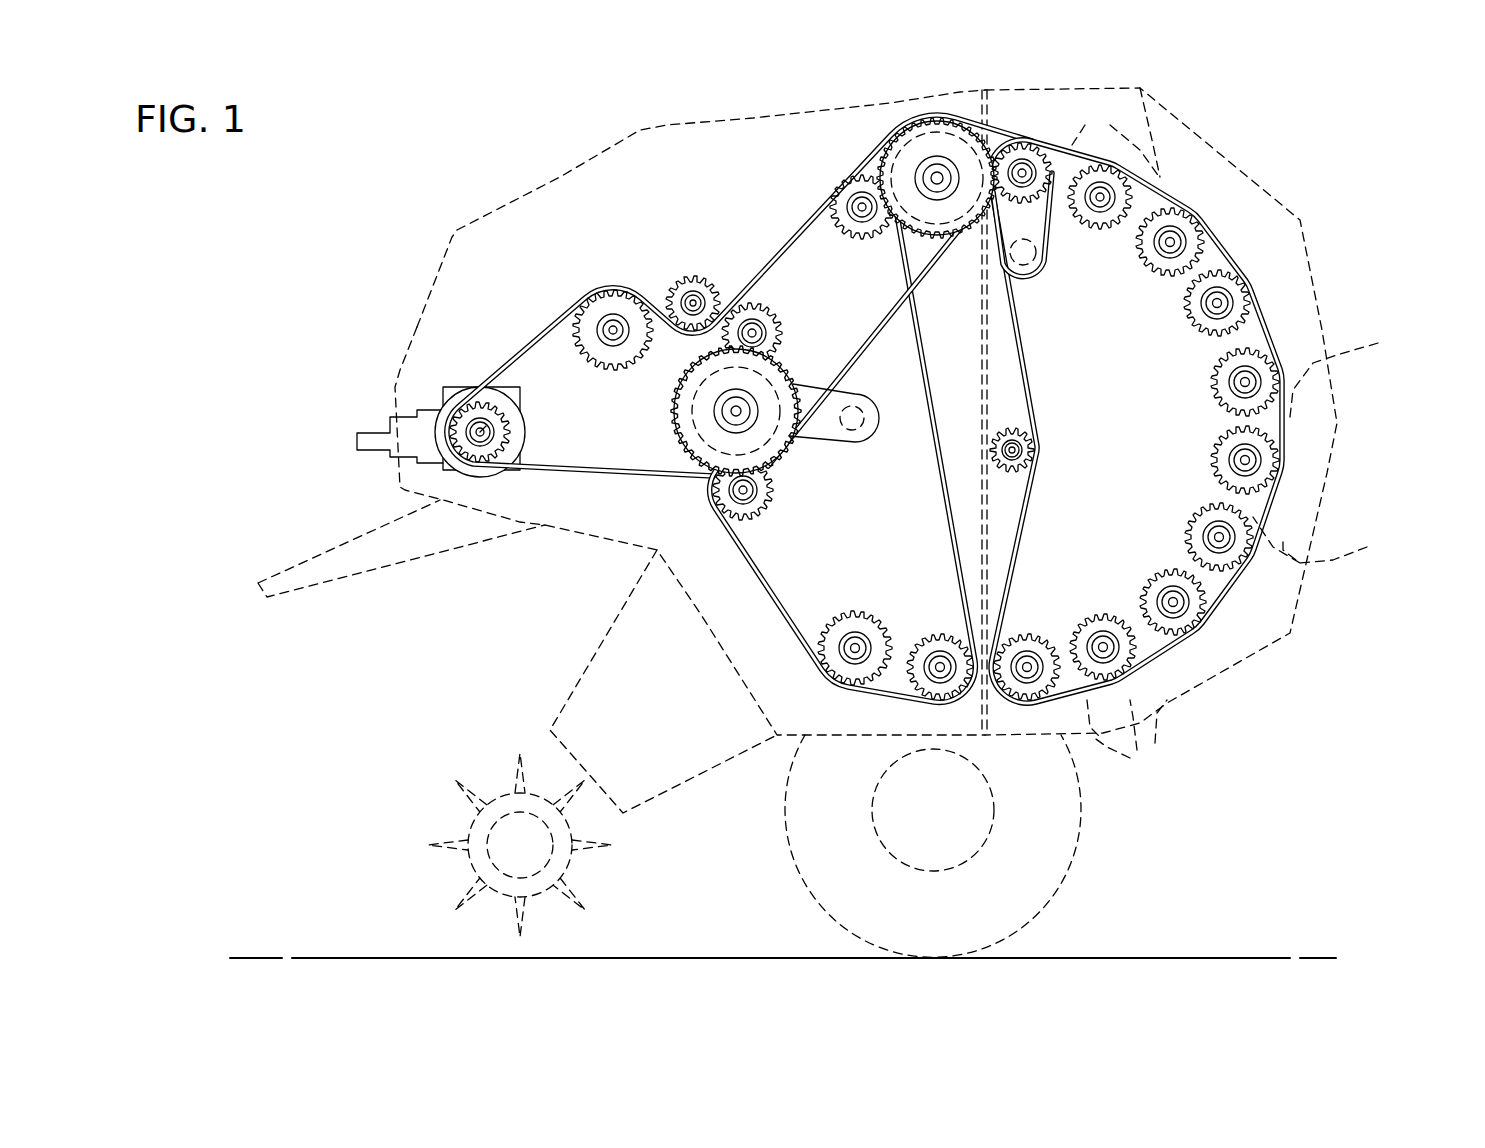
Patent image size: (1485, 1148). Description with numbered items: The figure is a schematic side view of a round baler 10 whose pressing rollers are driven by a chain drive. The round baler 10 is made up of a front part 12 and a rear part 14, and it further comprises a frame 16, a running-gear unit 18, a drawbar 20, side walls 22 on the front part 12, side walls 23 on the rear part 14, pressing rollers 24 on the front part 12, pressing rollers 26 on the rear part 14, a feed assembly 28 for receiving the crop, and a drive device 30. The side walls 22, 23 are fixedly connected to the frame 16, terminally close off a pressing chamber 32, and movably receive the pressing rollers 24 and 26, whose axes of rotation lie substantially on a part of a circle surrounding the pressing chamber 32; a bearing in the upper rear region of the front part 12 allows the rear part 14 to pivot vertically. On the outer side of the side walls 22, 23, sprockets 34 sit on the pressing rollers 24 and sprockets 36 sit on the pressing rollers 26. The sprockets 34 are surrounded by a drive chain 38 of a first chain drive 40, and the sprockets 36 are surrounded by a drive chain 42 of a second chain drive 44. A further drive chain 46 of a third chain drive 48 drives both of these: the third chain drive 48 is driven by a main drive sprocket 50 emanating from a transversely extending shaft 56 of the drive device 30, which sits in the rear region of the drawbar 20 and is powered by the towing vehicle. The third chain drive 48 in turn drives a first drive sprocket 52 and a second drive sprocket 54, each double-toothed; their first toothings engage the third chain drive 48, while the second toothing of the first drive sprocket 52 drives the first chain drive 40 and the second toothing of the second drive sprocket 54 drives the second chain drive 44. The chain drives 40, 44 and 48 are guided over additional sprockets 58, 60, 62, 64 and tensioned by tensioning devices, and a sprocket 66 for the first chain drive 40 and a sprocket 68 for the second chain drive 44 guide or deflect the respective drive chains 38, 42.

The round baler 10 is at (1342, 216).
The front part 12 is at (556, 119).
The rear part 14 is at (1192, 90).
The frame 16 is at (612, 497).
The running-gear unit 18 is at (1113, 826).
The drawbar 20 is at (307, 580).
The side walls 22 is at (617, 198).
The side walls 23 is at (1080, 366).
The pressing rollers 24 is at (830, 178).
The pressing rollers 26 is at (1242, 436).
The feed assembly 28 is at (700, 797).
The drive device 30 is at (470, 388).
The pressing chamber 32 is at (1103, 268).
The sprockets 34 is at (937, 118).
The sprockets 36 is at (1025, 143).
The drive chain 38 is at (948, 535).
The first chain drive 40 is at (760, 613).
The drive chain 42 is at (1210, 257).
The second chain drive 44 is at (1272, 278).
The drive chain 46 is at (550, 330).
The third chain drive 48 is at (563, 306).
The main drive sprocket 50 is at (503, 433).
The first drive sprocket 52 is at (675, 423).
The second drive sprocket 54 is at (900, 118).
The shaft 56 is at (475, 430).
The sprocket 58 is at (598, 343).
The sprocket 60 is at (677, 288).
The sprocket 62 is at (800, 258).
The sprocket 64 is at (1030, 440).
The sprocket 66 is at (862, 440).
The sprocket 68 is at (1030, 272).